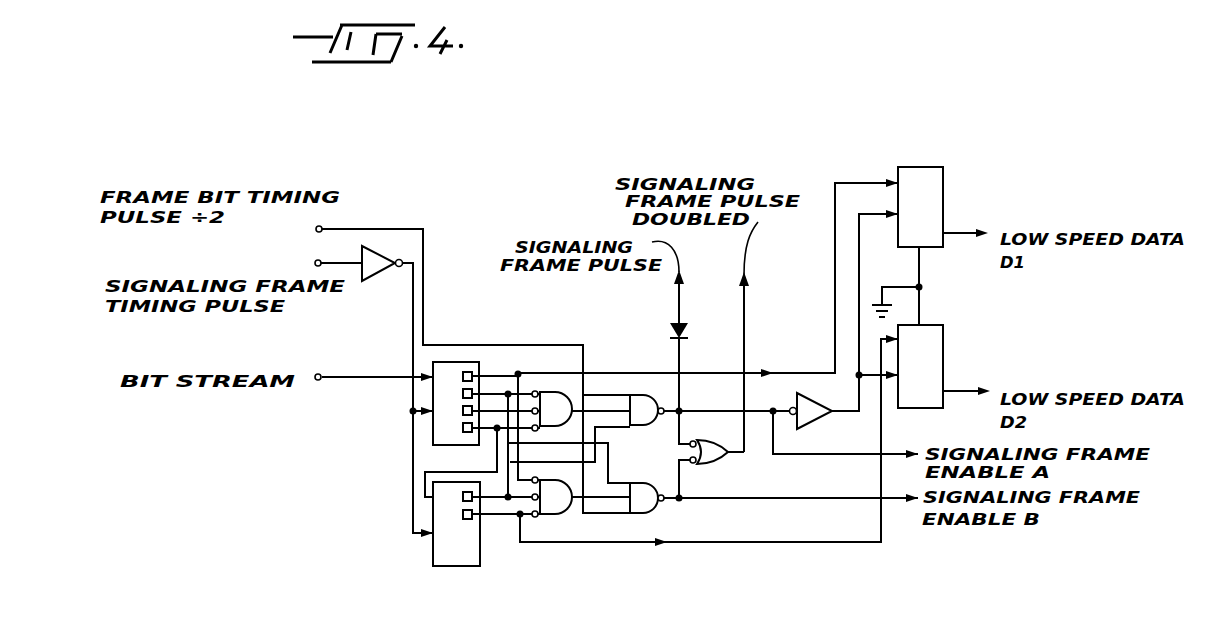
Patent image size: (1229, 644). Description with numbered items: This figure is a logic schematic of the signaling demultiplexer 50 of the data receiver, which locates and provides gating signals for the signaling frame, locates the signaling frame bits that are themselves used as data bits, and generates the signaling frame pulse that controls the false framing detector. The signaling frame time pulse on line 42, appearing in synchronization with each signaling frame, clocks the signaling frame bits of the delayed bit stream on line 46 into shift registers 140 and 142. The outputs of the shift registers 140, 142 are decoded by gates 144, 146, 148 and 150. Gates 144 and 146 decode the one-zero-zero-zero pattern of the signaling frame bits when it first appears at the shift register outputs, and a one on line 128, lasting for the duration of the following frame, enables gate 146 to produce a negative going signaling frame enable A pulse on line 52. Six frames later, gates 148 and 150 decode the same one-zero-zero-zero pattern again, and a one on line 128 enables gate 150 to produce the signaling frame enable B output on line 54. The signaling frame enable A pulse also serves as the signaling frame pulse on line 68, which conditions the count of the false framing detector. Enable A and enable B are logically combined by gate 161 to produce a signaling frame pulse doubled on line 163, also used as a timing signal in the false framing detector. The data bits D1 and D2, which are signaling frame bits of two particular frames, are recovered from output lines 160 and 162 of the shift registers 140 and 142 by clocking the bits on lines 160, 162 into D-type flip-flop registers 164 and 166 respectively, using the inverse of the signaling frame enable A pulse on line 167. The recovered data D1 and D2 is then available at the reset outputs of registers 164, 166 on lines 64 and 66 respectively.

The line 128 is at (343, 226).
The line 42 is at (345, 260).
The line 46 is at (356, 353).
The shift register 140 is at (450, 372).
The output line 160 is at (494, 372).
The shift register 142 is at (442, 546).
The output line 162 is at (502, 518).
The gate 144 is at (548, 410).
The gate 146 is at (652, 385).
The gate 148 is at (552, 505).
The gate 150 is at (645, 477).
The line 52 is at (712, 396).
The line 54 is at (733, 500).
The gate 161 is at (714, 462).
The line 163 is at (747, 322).
The line 68 is at (678, 305).
The line 167 is at (843, 412).
The register 164 is at (928, 163).
The register 166 is at (920, 331).
The line 64 is at (958, 233).
The line 66 is at (962, 389).
The signaling demultiplexer 50 is at (531, 578).